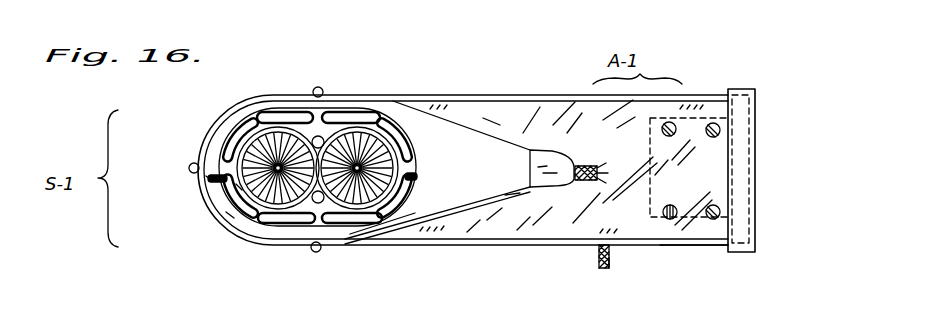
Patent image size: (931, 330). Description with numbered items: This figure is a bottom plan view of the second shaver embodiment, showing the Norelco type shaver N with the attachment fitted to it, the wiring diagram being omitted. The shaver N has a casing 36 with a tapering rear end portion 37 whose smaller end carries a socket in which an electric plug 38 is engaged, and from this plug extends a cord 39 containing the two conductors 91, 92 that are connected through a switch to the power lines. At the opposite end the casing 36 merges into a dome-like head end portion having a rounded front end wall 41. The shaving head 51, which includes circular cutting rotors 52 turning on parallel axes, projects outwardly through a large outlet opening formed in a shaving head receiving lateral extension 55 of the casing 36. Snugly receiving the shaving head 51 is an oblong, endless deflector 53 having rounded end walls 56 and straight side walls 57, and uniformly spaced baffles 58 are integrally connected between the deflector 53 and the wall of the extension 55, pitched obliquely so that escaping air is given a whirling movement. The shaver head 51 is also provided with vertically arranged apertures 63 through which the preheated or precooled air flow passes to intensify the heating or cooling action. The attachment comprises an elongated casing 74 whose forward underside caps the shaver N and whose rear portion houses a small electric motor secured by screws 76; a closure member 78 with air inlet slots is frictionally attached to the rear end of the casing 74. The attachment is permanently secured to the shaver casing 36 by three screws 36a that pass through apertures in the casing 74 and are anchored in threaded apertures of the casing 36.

The casing 36 is at (463, 137).
The screws 36a is at (320, 88).
The tapering rear end portion 37 is at (513, 205).
The electric plug 38 is at (555, 160).
The cord 39 is at (592, 178).
The rounded front end wall 41 is at (210, 178).
The shaving head 51 is at (303, 203).
The circular cutting rotors 52 is at (268, 205).
The deflector 53 is at (230, 214).
The lateral extension 55 is at (396, 114).
The end walls 56 is at (238, 186).
The side walls 57 is at (288, 122).
The baffles 58 is at (330, 122).
The apertures 63 is at (325, 135).
The casing 74 is at (684, 247).
The screws 76 is at (722, 134).
The closure member 78 is at (752, 219).
The conductor 91 is at (598, 262).
The conductor 92 is at (612, 263).
The shaver N is at (478, 120).